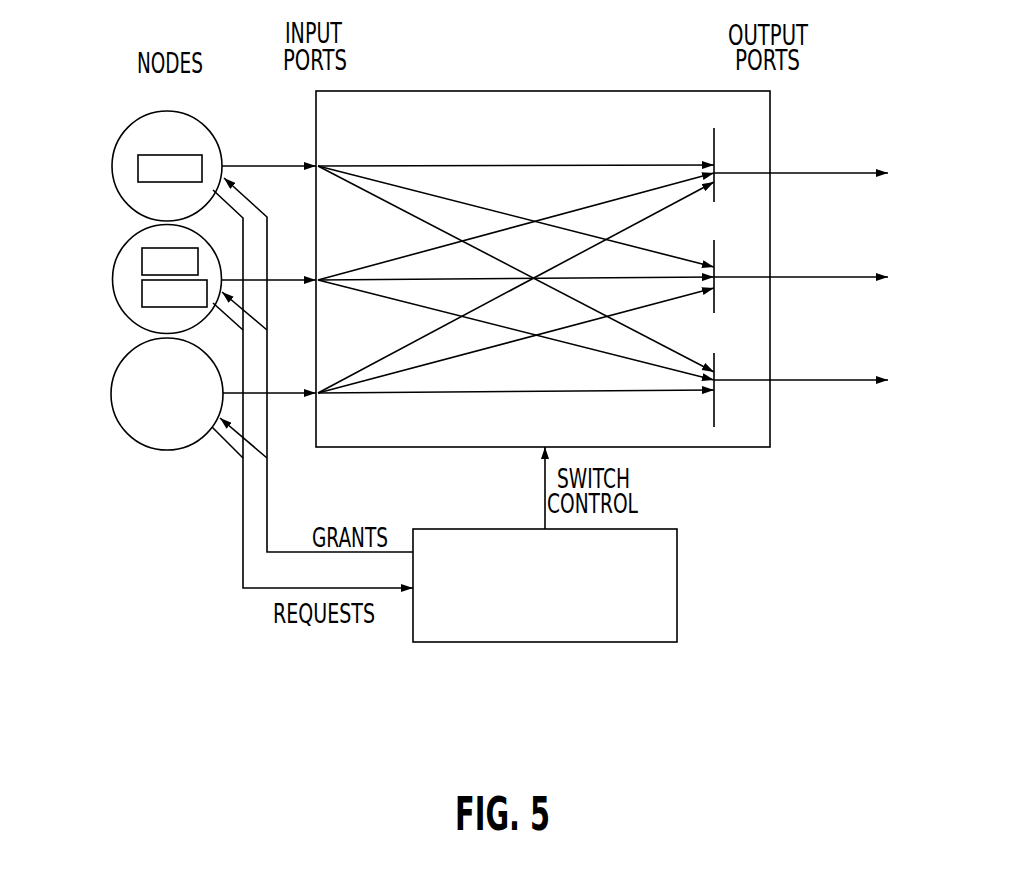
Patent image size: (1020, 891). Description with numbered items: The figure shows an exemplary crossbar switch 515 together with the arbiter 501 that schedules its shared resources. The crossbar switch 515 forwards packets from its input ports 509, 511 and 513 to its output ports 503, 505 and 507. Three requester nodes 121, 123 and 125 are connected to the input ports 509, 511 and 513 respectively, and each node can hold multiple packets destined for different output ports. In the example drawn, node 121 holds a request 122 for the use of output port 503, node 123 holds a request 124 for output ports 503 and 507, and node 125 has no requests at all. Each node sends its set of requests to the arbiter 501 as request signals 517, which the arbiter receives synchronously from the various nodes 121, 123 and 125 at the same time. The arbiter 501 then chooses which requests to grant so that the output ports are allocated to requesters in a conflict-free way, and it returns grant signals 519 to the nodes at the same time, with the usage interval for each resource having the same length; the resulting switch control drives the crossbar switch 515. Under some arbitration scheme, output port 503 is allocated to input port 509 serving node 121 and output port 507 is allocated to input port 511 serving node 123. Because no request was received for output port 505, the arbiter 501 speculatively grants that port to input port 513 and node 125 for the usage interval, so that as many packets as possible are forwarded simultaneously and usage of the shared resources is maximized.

The node 121 is at (134, 172).
The request 122 is at (124, 158).
The node 123 is at (134, 287).
The request 124 is at (127, 277).
The node 125 is at (135, 401).
The arbiter 501 is at (602, 585).
The output port 503 is at (797, 154).
The output port 505 is at (799, 264).
The output port 507 is at (799, 376).
The input port 509 is at (311, 141).
The input port 511 is at (311, 250).
The input port 513 is at (311, 359).
The crossbar switch 515 is at (543, 243).
The request signals 517 is at (293, 410).
The grant signals 519 is at (316, 365).